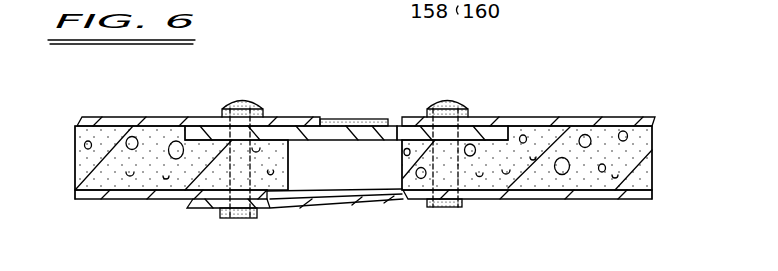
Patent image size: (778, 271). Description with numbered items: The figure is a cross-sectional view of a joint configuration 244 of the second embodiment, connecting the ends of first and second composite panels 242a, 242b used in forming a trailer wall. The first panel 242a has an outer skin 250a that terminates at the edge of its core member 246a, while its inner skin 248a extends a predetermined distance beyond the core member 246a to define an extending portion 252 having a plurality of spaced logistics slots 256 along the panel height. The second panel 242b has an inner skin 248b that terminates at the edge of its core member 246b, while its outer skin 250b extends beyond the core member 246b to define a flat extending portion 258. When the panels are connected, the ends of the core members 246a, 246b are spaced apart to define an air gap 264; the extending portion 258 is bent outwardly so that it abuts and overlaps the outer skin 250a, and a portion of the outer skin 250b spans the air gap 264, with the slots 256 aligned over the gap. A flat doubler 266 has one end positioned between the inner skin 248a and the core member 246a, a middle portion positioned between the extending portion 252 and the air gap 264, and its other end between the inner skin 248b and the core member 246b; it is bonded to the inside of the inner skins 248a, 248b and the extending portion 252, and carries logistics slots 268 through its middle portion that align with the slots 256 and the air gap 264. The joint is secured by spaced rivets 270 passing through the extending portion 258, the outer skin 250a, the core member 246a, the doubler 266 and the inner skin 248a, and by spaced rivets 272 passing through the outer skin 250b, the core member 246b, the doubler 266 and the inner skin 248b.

The first composite panel 242a is at (108, 170).
The second composite panel 242b is at (630, 150).
The joint configuration 244 is at (284, 218).
The core member 246a is at (92, 135).
The core member 246b is at (632, 138).
The inner skin 248a is at (157, 118).
The inner skin 248b is at (607, 117).
The outer skin 250a is at (138, 200).
The outer skin 250b is at (540, 199).
The extending portion 252 is at (293, 123).
The logistics slots 256 is at (362, 120).
The extending portion 258 is at (302, 205).
The air gap 264 is at (380, 176).
The doubler 266 is at (410, 133).
The logistics slots 268 is at (322, 132).
The rivets 270 is at (245, 103).
The rivets 272 is at (447, 102).